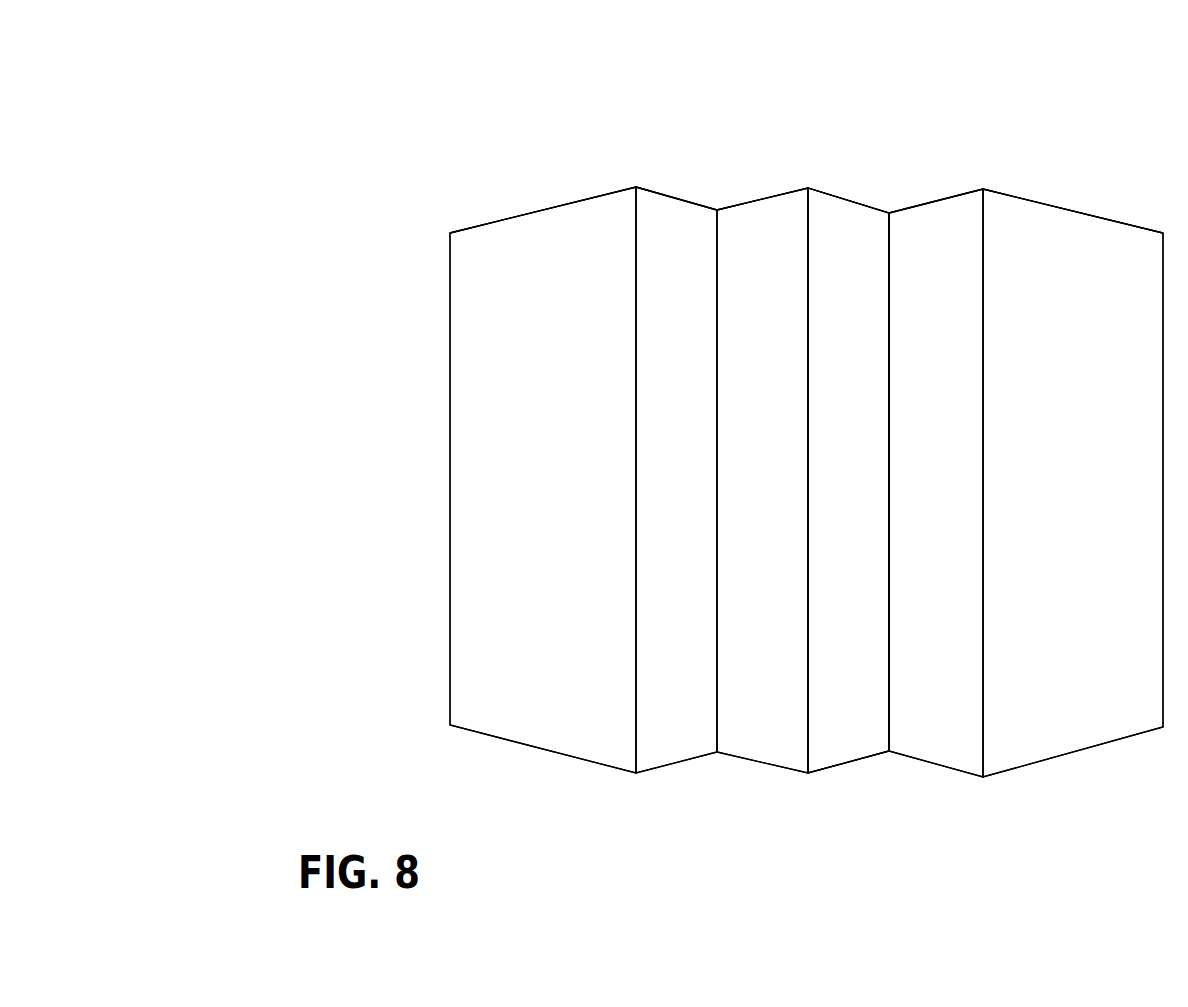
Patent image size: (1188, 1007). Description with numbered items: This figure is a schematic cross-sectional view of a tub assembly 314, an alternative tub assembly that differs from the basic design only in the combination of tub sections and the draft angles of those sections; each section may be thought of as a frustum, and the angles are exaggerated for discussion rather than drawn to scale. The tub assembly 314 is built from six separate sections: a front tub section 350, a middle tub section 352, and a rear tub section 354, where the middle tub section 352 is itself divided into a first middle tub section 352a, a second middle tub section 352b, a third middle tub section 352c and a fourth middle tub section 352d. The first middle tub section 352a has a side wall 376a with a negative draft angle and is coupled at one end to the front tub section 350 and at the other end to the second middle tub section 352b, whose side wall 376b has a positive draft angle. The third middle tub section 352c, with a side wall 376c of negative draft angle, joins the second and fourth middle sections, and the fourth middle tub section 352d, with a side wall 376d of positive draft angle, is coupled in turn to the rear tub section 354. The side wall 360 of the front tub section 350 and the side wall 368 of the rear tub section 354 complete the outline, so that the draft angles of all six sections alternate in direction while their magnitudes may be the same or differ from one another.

The tub assembly 314 is at (1076, 84).
The front tub section 350 is at (510, 197).
The middle tub section 352 is at (835, 140).
The first middle tub section 352a is at (693, 200).
The second middle tub section 352b is at (769, 188).
The third middle tub section 352c is at (845, 185).
The fourth middle tub section 352d is at (937, 188).
The rear tub section 354 is at (1077, 190).
The side wall of front tub section 360 is at (558, 207).
The side wall of rear tub section 368 is at (1108, 218).
The side wall 376a is at (652, 192).
The side wall 376b is at (792, 191).
The side wall 376c is at (865, 205).
The side wall 376d is at (957, 196).